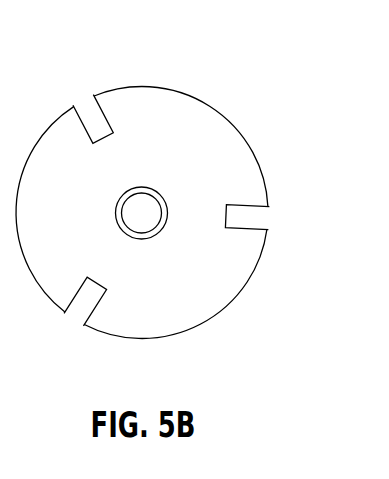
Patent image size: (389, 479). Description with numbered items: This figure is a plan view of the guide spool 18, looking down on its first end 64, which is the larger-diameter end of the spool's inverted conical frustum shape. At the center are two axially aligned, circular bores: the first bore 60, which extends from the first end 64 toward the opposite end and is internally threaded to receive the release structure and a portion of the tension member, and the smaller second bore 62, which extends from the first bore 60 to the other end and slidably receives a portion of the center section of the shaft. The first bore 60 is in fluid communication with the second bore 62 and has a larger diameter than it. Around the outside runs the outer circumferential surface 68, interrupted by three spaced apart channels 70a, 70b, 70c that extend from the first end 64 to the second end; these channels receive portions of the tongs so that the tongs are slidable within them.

The guide spool 18 is at (250, 93).
The first bore 60 is at (159, 230).
The second bore 62 is at (160, 192).
The first end 64 is at (214, 302).
The outer circumferential surface 68 is at (160, 86).
The channel 70a is at (86, 108).
The channel 70b is at (78, 303).
The channel 70c is at (254, 207).